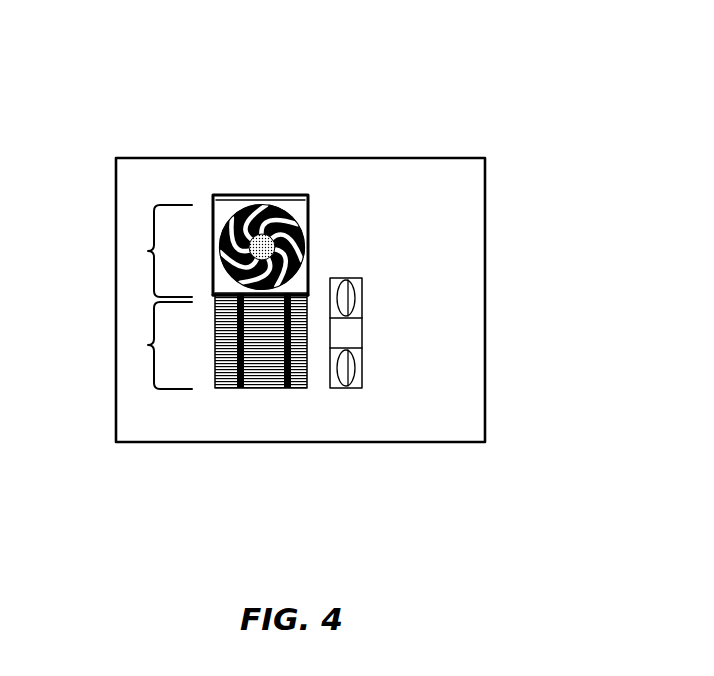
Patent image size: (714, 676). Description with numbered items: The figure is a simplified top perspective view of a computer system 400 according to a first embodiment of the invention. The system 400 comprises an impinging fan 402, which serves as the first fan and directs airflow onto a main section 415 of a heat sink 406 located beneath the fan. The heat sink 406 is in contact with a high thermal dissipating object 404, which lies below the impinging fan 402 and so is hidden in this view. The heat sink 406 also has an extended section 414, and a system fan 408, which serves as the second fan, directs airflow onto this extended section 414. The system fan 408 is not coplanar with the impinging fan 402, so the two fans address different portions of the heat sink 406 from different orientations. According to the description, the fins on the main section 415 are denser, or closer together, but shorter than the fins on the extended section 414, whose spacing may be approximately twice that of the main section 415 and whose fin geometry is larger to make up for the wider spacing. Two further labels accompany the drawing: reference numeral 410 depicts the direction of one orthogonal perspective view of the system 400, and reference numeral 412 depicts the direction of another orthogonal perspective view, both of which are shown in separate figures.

The computer system 400 is at (280, 158).
The impinging fan 402 is at (283, 212).
The high thermal dissipating object 404 is at (308, 222).
The heat sink 406 is at (272, 343).
The system fan 408 is at (362, 342).
The perspective view 410 is at (485, 300).
The perspective view 412 is at (282, 442).
The extended section 414 is at (129, 345).
The main section 415 is at (129, 251).